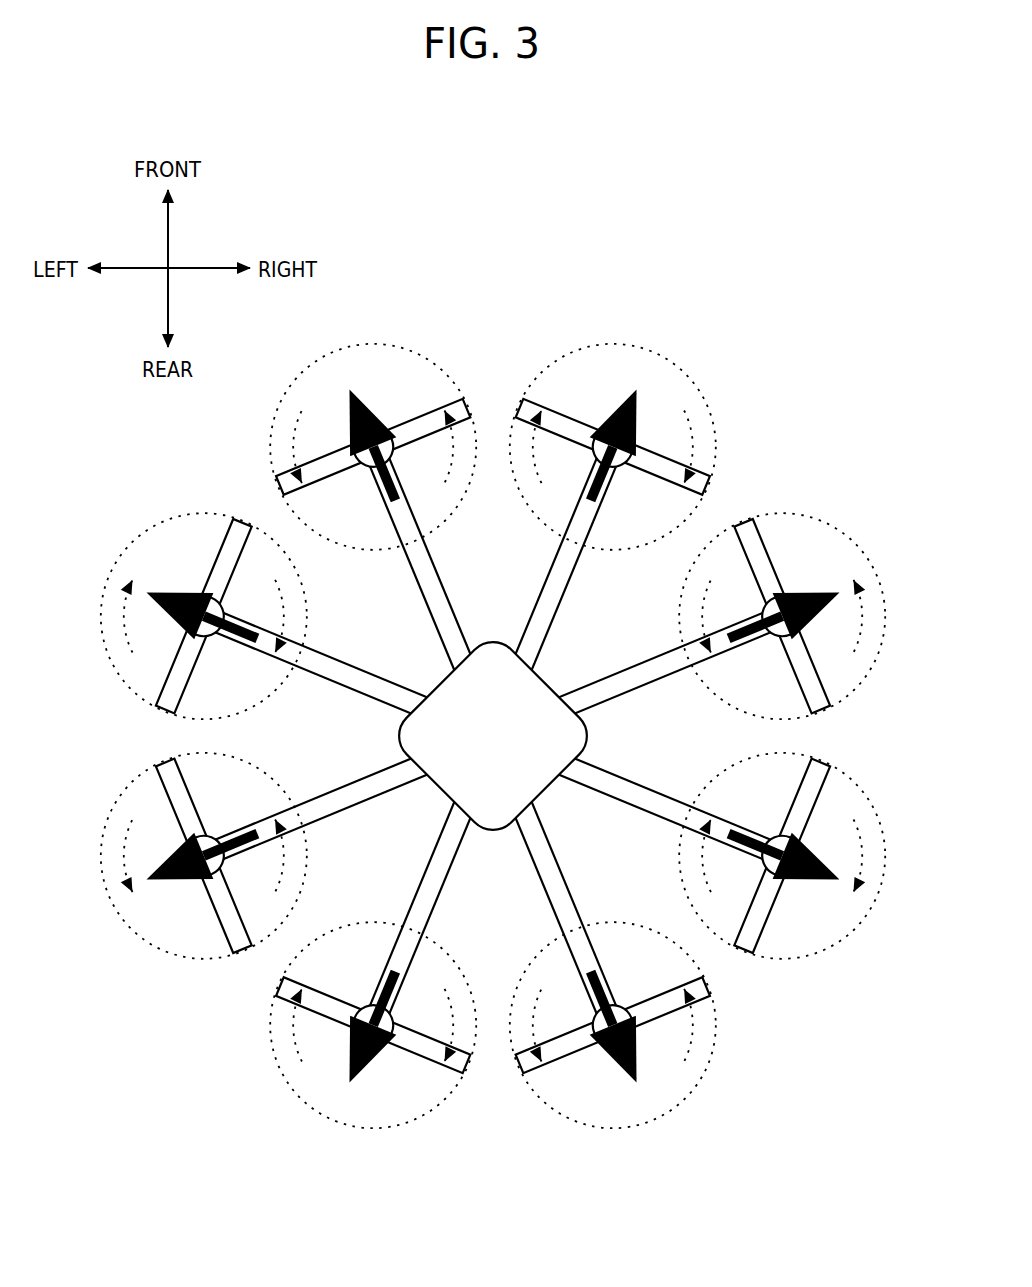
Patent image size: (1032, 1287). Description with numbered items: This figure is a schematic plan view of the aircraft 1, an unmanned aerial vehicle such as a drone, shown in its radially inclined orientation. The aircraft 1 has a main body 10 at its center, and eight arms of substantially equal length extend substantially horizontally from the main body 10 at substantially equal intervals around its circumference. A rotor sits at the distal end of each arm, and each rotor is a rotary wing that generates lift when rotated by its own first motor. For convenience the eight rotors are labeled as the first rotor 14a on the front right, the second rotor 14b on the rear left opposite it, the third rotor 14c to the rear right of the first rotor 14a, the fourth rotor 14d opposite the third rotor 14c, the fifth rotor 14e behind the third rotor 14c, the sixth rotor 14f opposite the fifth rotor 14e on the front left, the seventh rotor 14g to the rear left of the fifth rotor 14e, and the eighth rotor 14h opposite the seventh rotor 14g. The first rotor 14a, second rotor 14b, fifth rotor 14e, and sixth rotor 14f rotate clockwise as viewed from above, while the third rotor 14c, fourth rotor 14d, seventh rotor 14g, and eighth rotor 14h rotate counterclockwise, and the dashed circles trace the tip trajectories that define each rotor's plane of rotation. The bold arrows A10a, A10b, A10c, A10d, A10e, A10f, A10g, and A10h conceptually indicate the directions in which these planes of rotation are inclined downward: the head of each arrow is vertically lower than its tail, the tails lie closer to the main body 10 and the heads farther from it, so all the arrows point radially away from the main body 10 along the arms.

The aircraft 1 is at (817, 351).
The main body 10 is at (553, 684).
The bold arrow A10a is at (606, 492).
The bold arrow A10b is at (386, 983).
The bold arrow A10c is at (742, 652).
The bold arrow A10d is at (247, 810).
The bold arrow A10e is at (742, 856).
The bold arrow A10f is at (253, 625).
The bold arrow A10g is at (598, 985).
The bold arrow A10h is at (400, 481).
The first rotor 14a is at (641, 445).
The second rotor 14b is at (348, 1027).
The third rotor 14c is at (798, 628).
The fourth rotor 14d is at (189, 842).
The fifth rotor 14e is at (784, 877).
The sixth rotor 14f is at (202, 595).
The seventh rotor 14g is at (602, 1040).
The eighth rotor 14h is at (383, 433).